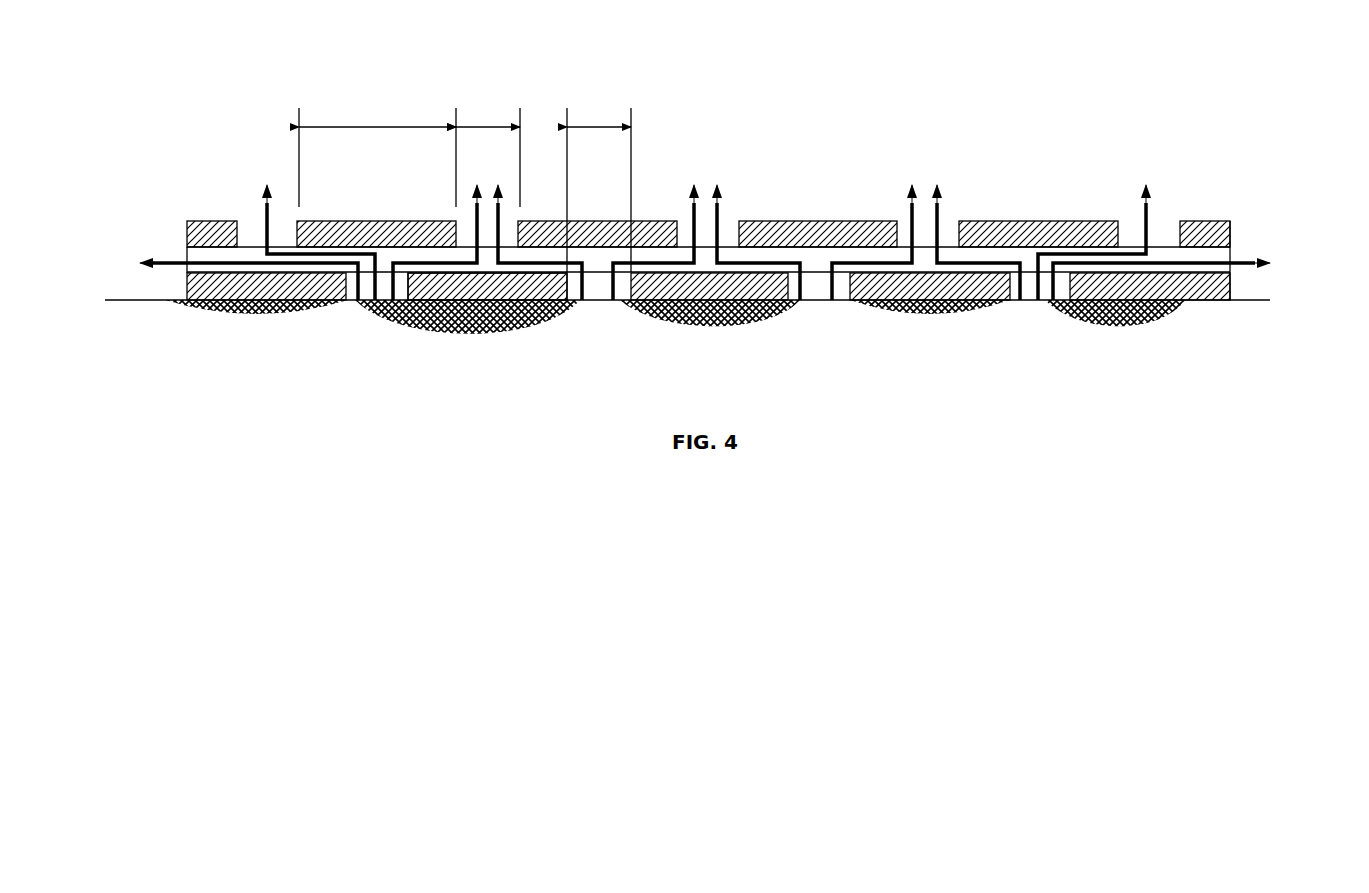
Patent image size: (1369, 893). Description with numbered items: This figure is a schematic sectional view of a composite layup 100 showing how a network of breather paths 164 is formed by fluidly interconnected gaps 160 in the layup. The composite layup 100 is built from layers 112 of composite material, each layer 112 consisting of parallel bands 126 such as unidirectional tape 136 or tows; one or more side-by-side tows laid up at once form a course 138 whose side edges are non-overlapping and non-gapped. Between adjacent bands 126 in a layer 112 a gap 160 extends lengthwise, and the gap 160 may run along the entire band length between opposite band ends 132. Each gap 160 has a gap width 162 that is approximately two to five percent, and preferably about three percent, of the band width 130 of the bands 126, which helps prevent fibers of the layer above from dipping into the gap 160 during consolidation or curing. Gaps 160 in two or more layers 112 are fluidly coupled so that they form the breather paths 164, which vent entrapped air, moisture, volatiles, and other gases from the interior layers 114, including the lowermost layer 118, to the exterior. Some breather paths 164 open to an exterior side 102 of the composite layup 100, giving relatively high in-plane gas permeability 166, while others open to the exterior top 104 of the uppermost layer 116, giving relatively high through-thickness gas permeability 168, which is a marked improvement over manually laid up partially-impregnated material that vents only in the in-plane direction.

The composite layup 100 is at (1212, 100).
The exterior side 102 is at (1237, 237).
The exterior top 104 is at (1200, 218).
The layer 112 is at (187, 258).
The interior layer 114 is at (443, 285).
The uppermost layer 116 is at (410, 221).
The lowermost layer 118 is at (515, 285).
The band 126 is at (203, 221).
The band width 130 is at (375, 126).
The band end 132 is at (1232, 272).
The unidirectional tape 136 is at (1032, 221).
The course 138 is at (650, 221).
The gap 160 is at (247, 221).
The gap width 162 is at (487, 126).
The breather path 164 is at (268, 184).
The in-plane gas permeability 166 is at (147, 262).
The through-thickness gas permeability 168 is at (498, 184).